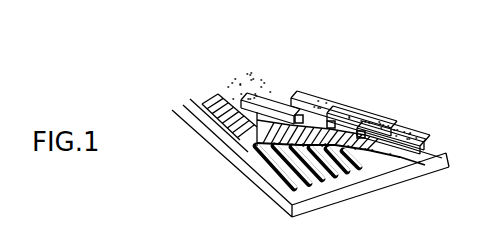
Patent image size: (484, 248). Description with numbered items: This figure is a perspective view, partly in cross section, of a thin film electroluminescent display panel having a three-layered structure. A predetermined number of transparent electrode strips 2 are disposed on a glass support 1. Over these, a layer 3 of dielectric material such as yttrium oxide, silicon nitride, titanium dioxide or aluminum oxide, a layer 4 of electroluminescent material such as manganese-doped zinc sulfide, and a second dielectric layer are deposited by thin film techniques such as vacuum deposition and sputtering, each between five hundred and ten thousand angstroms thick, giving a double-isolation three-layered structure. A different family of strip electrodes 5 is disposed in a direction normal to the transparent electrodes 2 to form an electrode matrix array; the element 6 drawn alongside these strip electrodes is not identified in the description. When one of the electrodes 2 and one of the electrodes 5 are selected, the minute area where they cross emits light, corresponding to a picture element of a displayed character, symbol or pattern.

The glass support 1 is at (412, 173).
The transparent electrode strips 2 is at (282, 177).
The layer of dielectric material 3 is at (240, 140).
The layer of electroluminescent material 4 is at (203, 119).
The strip electrodes 5 is at (338, 106).
The bar electrode 6 is at (262, 92).